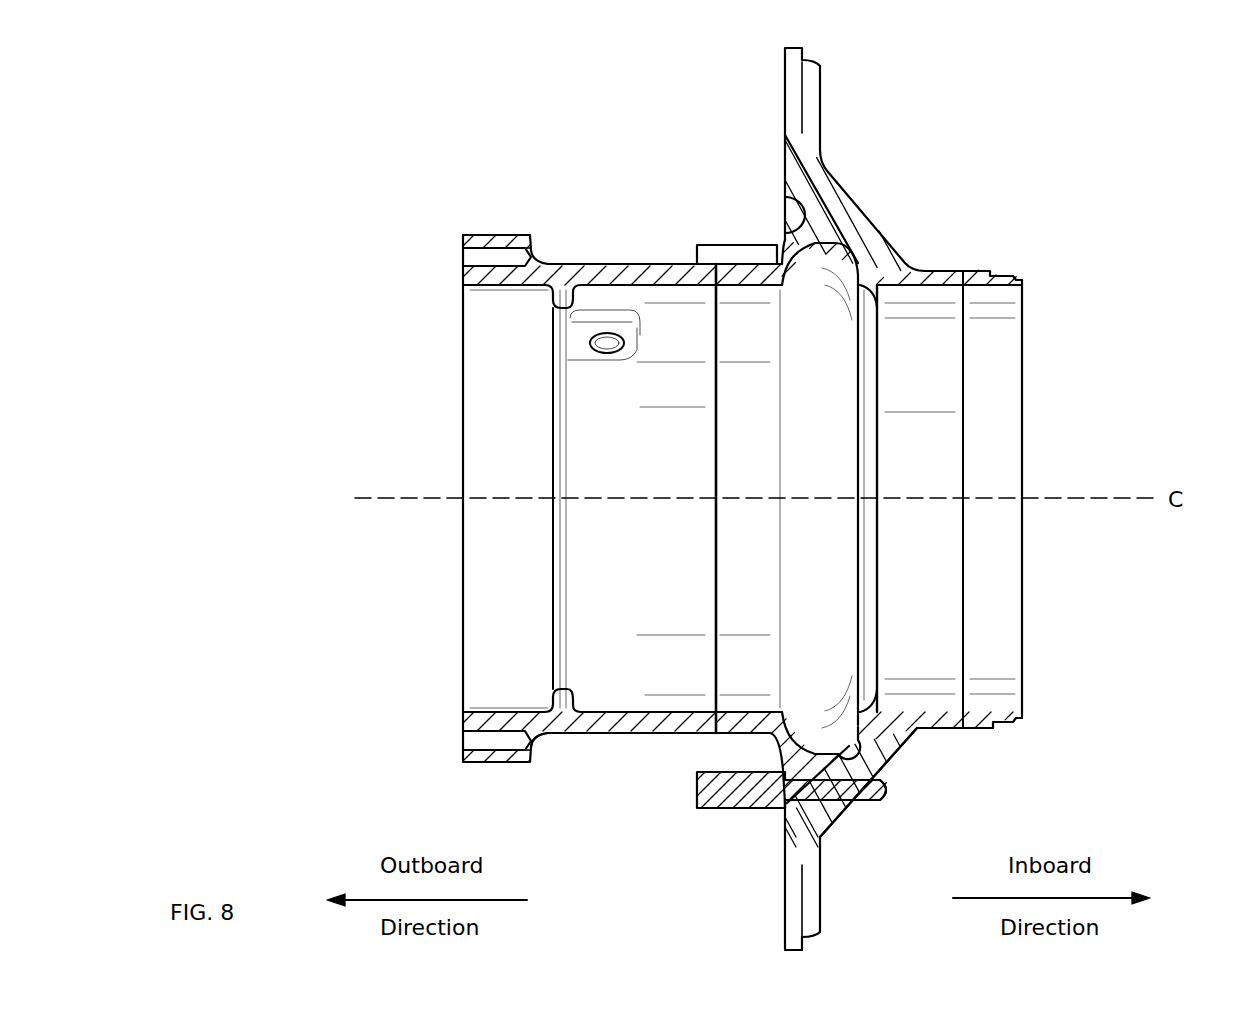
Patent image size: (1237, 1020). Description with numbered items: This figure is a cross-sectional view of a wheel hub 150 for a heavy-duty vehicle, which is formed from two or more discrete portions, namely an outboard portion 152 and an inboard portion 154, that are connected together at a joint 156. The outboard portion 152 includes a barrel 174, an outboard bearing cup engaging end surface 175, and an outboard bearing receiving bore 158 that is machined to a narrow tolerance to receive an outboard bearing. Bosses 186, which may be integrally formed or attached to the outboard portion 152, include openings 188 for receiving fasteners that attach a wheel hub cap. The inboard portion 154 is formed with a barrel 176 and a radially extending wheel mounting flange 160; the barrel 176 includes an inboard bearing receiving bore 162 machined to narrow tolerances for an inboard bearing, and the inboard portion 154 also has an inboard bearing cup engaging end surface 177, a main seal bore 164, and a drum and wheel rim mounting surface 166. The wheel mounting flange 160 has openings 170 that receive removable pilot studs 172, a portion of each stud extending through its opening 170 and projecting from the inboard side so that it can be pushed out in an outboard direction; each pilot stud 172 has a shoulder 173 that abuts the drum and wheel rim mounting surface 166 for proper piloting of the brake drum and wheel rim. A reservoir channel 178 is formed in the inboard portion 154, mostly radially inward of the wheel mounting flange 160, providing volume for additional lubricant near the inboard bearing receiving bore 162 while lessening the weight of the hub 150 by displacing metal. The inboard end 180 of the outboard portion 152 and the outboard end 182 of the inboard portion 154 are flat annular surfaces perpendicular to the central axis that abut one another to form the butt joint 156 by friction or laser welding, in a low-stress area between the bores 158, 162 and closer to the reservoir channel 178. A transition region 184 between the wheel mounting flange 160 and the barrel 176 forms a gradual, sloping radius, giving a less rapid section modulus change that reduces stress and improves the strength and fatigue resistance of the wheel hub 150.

The wheel hub 150 is at (1183, 152).
The outboard portion 152 is at (440, 782).
The inboard portion 154 is at (1027, 765).
The joint 156 is at (715, 578).
The outboard bearing receiving bore 158 is at (485, 711).
The wheel mounting flange 160 is at (842, 168).
The inboard bearing receiving bore 162 is at (927, 710).
The main seal bore 164 is at (987, 710).
The drum and wheel rim mounting surface 166 is at (784, 150).
The openings 170 is at (887, 790).
The pilot studs 172 is at (711, 808).
The shoulder 173 is at (777, 810).
The barrel 174 is at (579, 250).
The outboard bearing cup engaging end surface 175 is at (552, 303).
The barrel 176 is at (947, 252).
The inboard bearing cup engaging end surface 177 is at (870, 307).
The reservoir channel 178 is at (890, 753).
The inboard end 180 is at (716, 407).
The outboard end 182 is at (716, 413).
The transition region 184 is at (776, 270).
The bosses 186 is at (498, 236).
The openings 188 is at (463, 256).